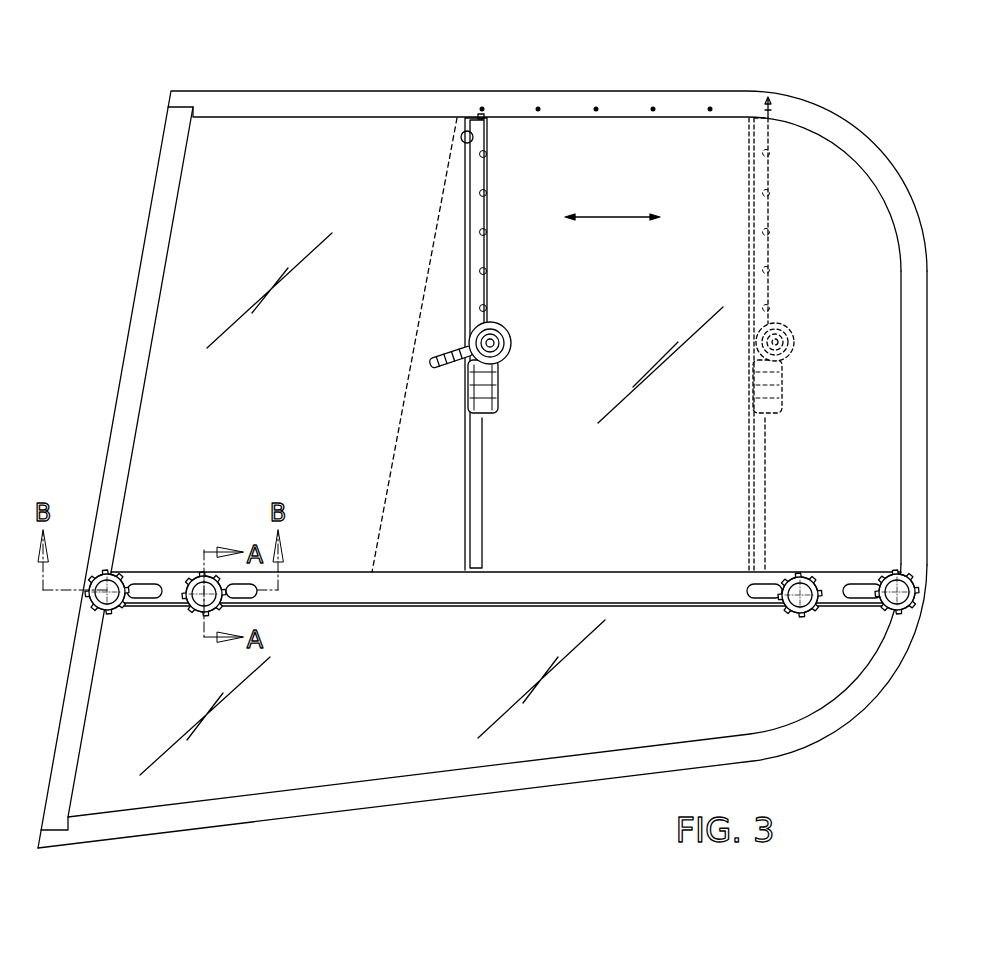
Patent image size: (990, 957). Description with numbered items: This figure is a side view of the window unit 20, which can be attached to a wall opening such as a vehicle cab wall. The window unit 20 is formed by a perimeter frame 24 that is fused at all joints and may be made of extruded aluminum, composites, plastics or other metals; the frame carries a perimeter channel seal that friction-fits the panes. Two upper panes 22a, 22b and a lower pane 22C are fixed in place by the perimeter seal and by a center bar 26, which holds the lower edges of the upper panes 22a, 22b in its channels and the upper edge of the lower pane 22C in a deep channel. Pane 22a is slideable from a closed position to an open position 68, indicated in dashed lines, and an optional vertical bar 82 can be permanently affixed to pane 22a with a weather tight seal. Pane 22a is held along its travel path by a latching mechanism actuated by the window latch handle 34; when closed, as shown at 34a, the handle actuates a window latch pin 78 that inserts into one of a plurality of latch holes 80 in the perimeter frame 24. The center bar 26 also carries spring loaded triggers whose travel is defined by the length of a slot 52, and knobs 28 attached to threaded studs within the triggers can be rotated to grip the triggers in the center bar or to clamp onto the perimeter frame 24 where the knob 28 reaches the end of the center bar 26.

The window unit 20 is at (514, 453).
The upper pane 22a is at (272, 158).
The upper pane 22b is at (588, 155).
The lower pane 22C is at (318, 763).
The perimeter frame 24 is at (918, 432).
The center bar 26 is at (550, 585).
The knob 28 is at (113, 580).
The window latch handle 34 is at (465, 383).
The closed latch handle 34a is at (750, 395).
The slot 52 is at (147, 580).
The open position 68 is at (450, 153).
The window latch pin 78 is at (777, 112).
The latch holes 80 is at (537, 104).
The vertical bar 82 is at (482, 475).